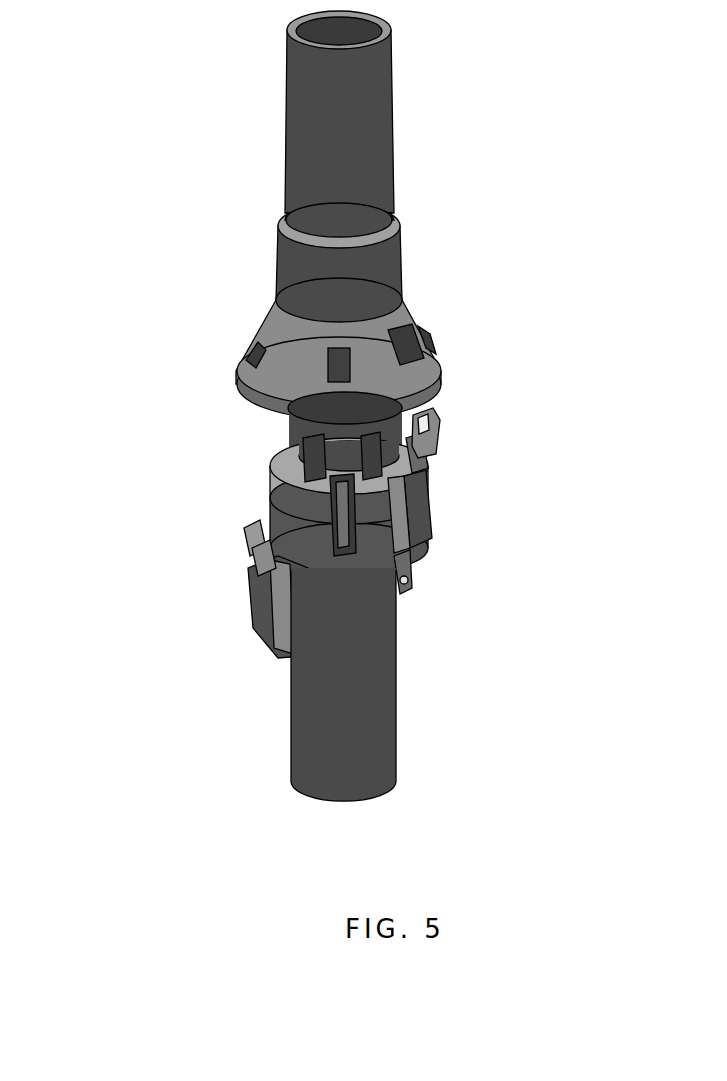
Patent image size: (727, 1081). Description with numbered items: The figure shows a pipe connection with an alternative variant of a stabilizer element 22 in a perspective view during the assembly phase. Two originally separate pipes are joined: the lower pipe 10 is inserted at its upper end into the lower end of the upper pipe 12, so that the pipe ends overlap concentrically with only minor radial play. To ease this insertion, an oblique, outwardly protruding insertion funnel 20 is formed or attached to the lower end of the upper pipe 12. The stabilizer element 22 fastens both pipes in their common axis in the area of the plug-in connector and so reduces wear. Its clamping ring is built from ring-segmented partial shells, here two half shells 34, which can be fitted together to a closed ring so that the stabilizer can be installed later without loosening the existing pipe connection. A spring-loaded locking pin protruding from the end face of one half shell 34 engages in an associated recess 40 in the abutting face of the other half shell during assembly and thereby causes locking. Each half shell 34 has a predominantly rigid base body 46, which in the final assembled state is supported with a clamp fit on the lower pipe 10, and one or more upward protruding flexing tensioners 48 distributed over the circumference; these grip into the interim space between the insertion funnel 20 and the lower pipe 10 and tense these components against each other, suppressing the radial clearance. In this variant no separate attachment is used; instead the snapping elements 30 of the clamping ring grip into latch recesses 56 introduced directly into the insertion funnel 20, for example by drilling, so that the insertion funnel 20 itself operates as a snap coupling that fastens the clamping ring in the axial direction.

The lower pipe 10 is at (386, 693).
The upper pipe 12 is at (383, 90).
The insertion funnel 20 is at (228, 360).
The stabilizer element 22 is at (321, 568).
The snapping elements 30 is at (430, 430).
The half shells 34 is at (432, 489).
The recess 40 is at (280, 645).
The base body 46 is at (400, 548).
The flexing tensioners 48 is at (410, 412).
The latch recesses 56 is at (408, 340).